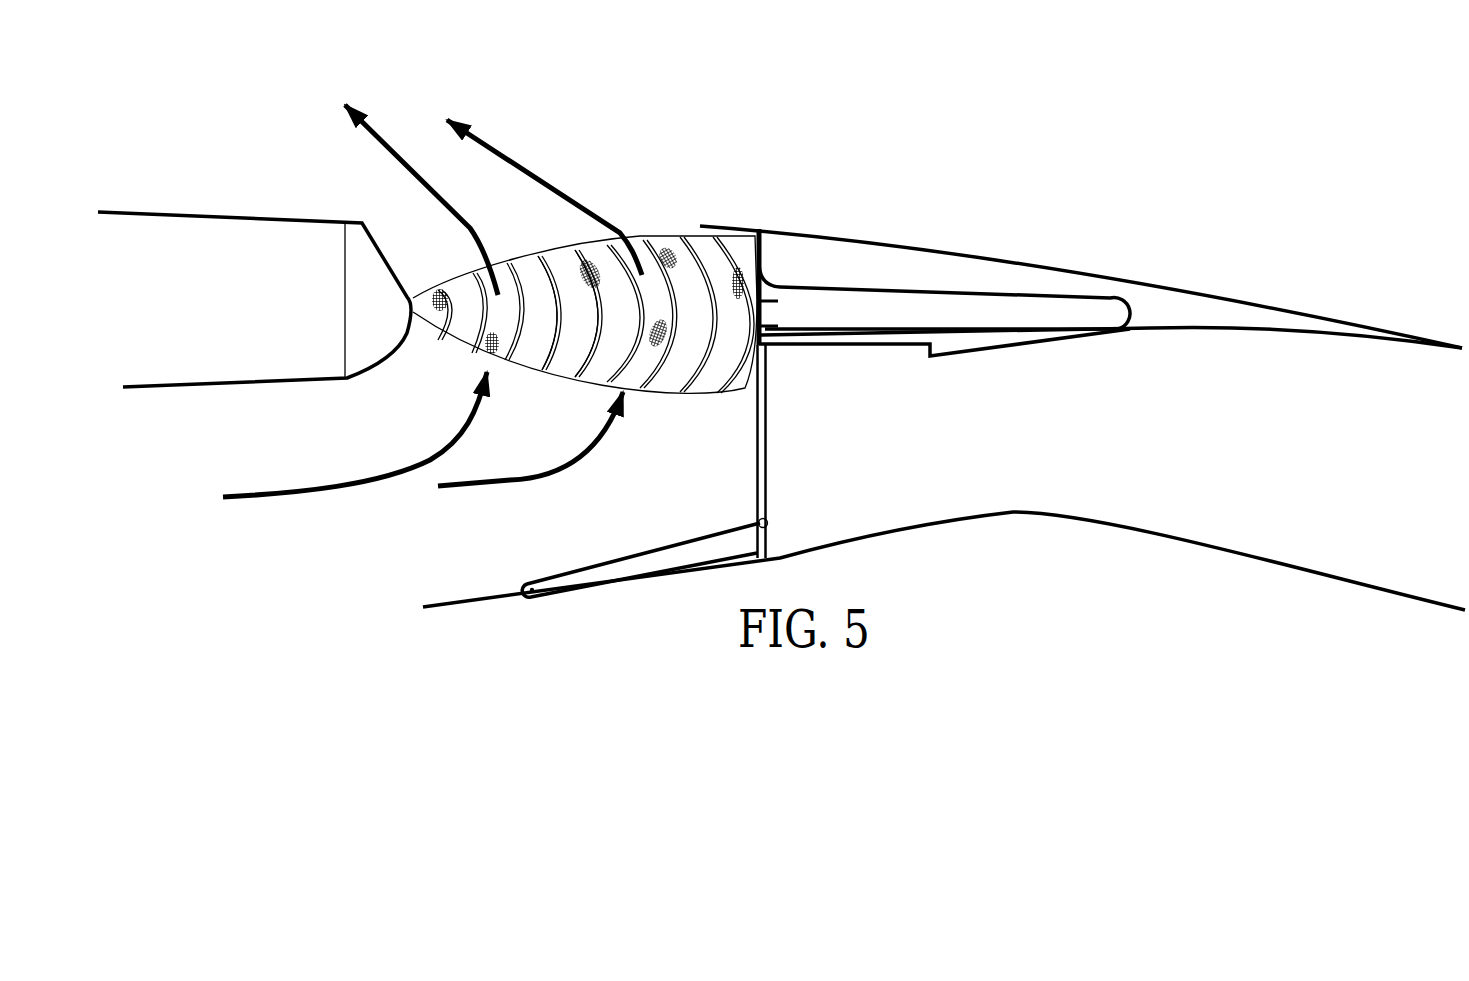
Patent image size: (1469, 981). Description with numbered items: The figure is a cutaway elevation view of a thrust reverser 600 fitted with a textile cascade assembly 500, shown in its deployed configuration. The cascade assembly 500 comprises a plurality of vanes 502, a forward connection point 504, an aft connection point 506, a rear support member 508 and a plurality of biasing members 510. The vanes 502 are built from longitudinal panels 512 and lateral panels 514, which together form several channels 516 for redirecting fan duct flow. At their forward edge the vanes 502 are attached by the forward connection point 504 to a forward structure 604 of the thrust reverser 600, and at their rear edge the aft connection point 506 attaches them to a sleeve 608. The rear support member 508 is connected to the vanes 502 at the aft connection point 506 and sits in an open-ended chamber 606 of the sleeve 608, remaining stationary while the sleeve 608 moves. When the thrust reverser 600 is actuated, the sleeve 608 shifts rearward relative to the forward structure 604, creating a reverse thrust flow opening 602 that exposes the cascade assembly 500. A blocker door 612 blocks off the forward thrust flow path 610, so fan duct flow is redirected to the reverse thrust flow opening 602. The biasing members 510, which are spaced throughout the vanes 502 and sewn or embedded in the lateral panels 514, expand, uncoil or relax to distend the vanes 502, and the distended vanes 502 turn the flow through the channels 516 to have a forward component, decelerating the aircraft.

The cascade assembly 500 is at (657, 230).
The plurality of vanes 502 is at (586, 393).
The forward connection point 504 is at (410, 290).
The aft connection point 506 is at (764, 286).
The rear support member 508 is at (775, 313).
The biasing members 510 is at (631, 358).
The longitudinal panels 512 is at (595, 258).
The lateral panels 514 is at (627, 293).
The channels 516 is at (597, 350).
The thrust reverser 600 is at (1000, 194).
The reverse thrust flow opening 602 is at (425, 392).
The forward structure 604 is at (263, 200).
The open-ended chamber 606 is at (1055, 305).
The sleeve 608 is at (1172, 288).
The forward thrust flow path 610 is at (1075, 460).
The blocker door 612 is at (775, 487).